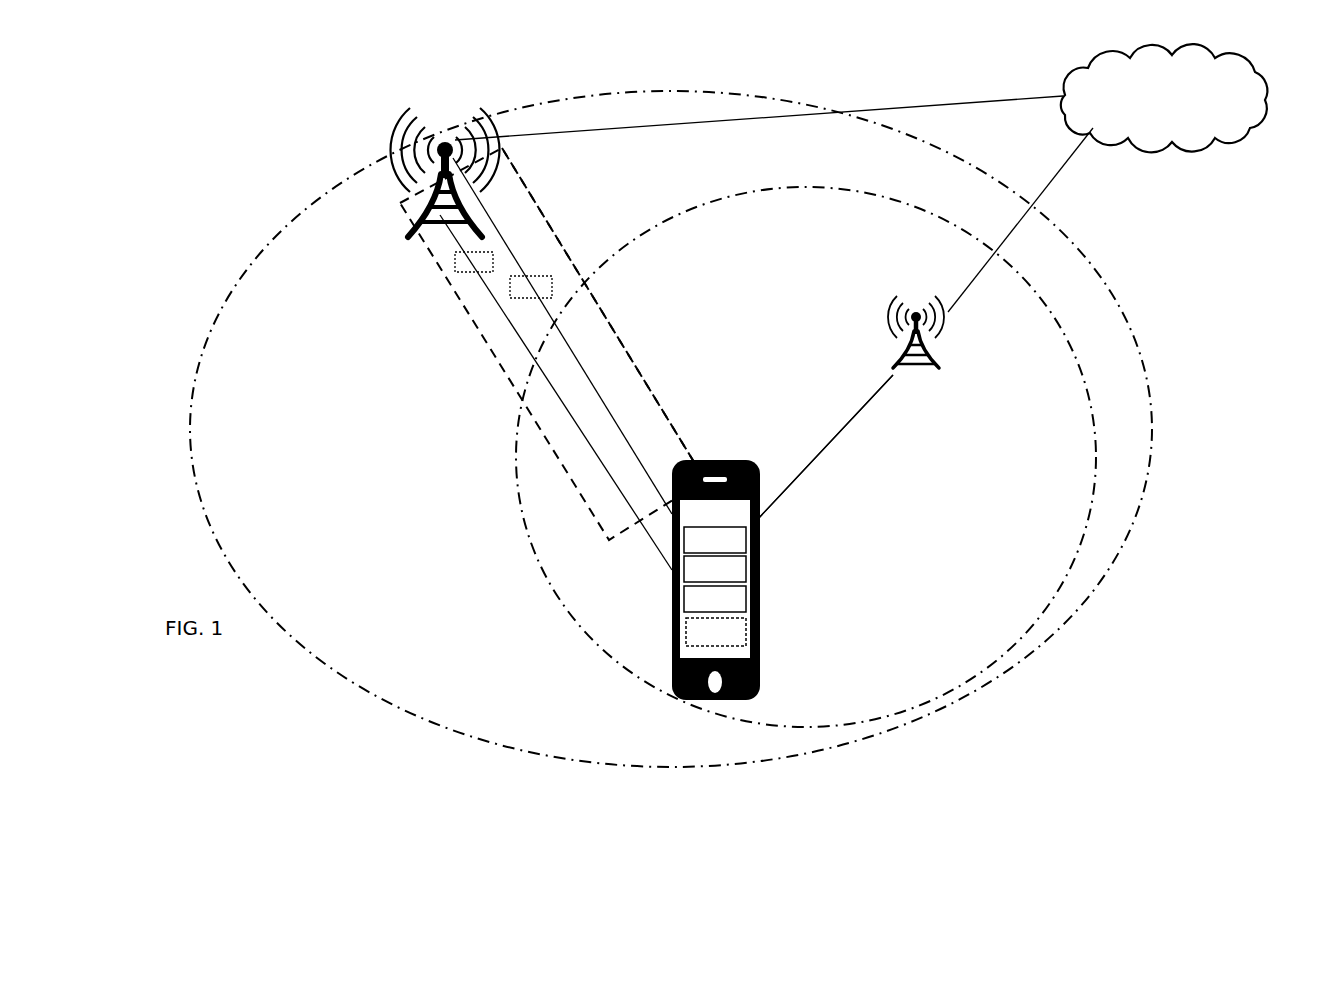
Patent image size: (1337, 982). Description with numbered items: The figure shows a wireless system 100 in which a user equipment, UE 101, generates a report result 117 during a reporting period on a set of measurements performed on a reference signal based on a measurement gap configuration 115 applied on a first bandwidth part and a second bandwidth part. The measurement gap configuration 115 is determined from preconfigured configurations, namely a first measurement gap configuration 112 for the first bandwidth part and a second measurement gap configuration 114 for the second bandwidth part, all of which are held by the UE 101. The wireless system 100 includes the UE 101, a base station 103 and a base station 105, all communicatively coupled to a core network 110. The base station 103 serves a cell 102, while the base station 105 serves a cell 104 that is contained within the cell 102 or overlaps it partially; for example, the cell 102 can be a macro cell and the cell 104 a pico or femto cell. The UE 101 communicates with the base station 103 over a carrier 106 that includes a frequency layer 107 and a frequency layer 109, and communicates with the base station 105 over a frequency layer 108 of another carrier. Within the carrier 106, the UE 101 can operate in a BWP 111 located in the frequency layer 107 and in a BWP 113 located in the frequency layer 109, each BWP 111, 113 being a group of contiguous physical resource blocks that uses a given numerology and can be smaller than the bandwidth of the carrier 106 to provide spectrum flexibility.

The wireless system 100 is at (303, 101).
The user equipment (UE) 101 is at (716, 580).
The cell 102 is at (671, 429).
The base station 103 is at (430, 210).
The cell 104 is at (806, 457).
The base station 105 is at (916, 317).
The carrier 106 is at (680, 430).
The frequency layer 107 is at (497, 313).
The frequency layer 108 is at (856, 410).
The frequency layer 109 is at (600, 397).
The core network 110 is at (1164, 98).
The bandwidth part (BWP) 111 is at (474, 262).
The first measurement gap configuration 112 is at (715, 540).
The bandwidth part (BWP) 113 is at (531, 287).
The second measurement gap configuration 114 is at (715, 569).
The measurement gap configuration 115 is at (715, 599).
The report result 117 is at (716, 632).